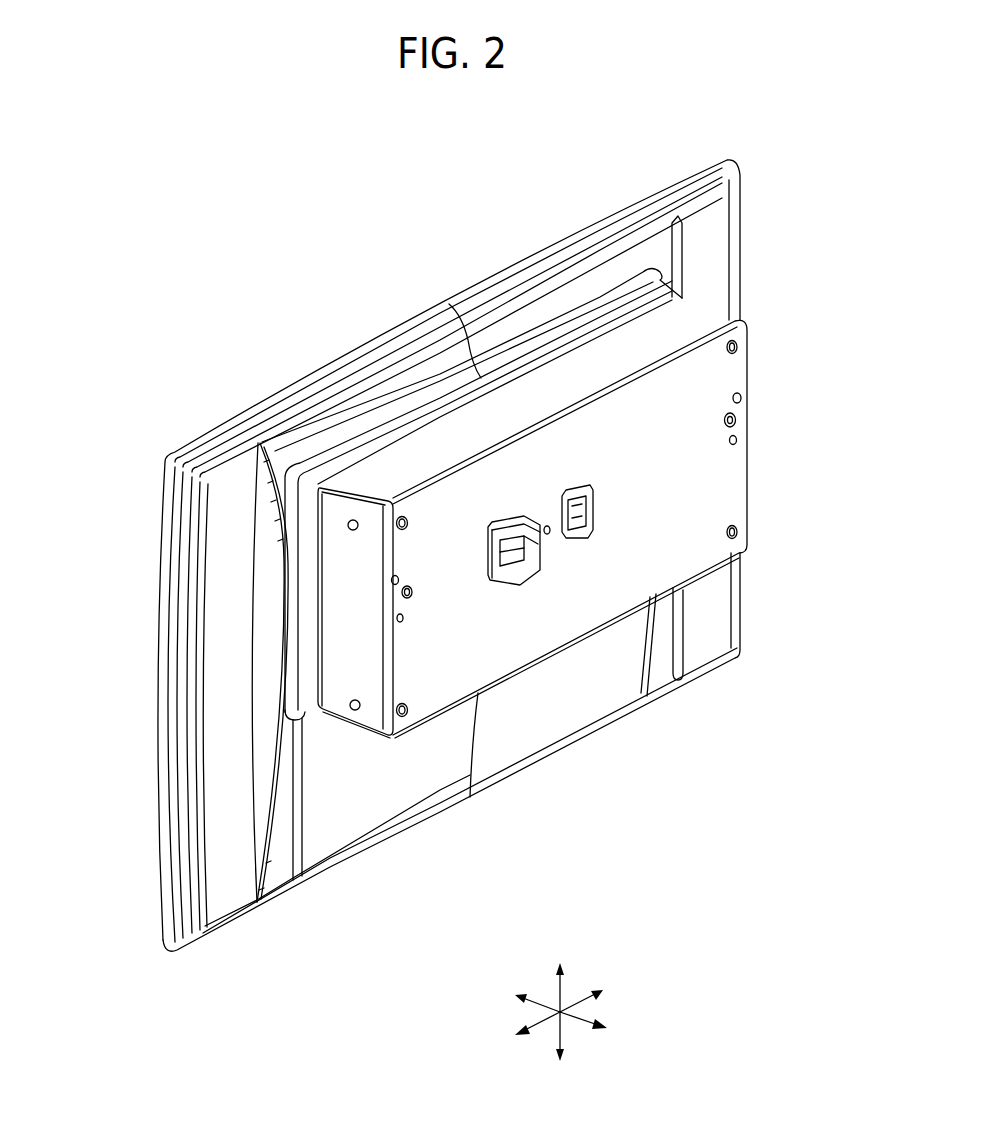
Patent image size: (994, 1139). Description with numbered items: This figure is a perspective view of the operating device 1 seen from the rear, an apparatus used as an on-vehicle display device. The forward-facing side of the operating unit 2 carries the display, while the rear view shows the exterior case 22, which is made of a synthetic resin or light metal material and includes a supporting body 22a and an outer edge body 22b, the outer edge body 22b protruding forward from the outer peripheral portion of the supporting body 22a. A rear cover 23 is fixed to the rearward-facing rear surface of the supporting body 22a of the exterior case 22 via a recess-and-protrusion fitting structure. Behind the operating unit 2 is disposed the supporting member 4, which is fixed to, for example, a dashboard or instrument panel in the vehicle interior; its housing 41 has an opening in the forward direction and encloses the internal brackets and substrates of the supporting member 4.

The operating device 1 is at (703, 108).
The operating unit 2 is at (255, 406).
The exterior case 22 is at (88, 498).
The supporting body 22a is at (215, 578).
The outer edge body 22b is at (165, 505).
The rear cover 23 is at (337, 797).
The supporting member 4 is at (754, 428).
The housing 41 is at (712, 480).